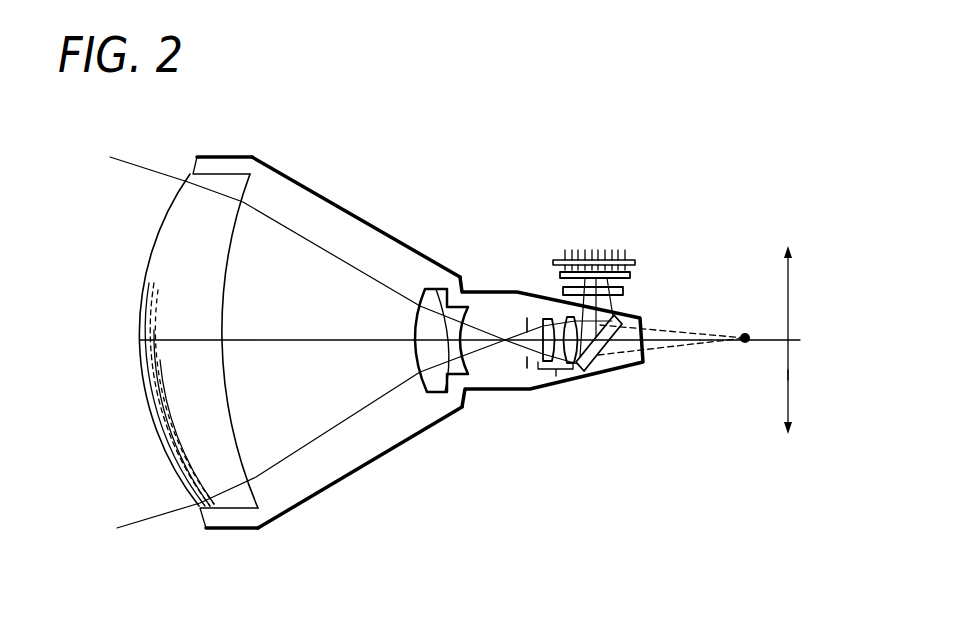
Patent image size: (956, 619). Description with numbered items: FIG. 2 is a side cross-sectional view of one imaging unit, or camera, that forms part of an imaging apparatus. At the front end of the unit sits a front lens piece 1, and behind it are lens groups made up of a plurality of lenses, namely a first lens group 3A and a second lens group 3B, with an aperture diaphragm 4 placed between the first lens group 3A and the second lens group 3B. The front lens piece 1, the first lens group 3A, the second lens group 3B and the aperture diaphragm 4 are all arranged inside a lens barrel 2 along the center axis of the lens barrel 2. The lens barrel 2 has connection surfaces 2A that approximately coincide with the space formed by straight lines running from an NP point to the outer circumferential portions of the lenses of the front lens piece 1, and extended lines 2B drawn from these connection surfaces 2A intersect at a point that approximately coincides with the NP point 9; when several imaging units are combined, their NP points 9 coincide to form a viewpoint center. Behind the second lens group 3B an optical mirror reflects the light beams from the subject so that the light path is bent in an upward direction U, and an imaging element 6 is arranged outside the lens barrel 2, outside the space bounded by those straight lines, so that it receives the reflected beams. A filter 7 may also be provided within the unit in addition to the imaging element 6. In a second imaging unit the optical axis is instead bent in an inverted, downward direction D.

The front lens piece 1 is at (223, 478).
The lens barrel 2 is at (323, 493).
The connection surface 2A is at (383, 228).
The extended line 2B is at (676, 321).
The first lens group 3A is at (475, 367).
The second lens group 3B is at (557, 376).
The aperture diaphragm 4 is at (523, 368).
The imaging element 6 is at (636, 262).
The filter 7 is at (624, 291).
The NP point 9 is at (745, 347).
The upward direction U is at (792, 298).
The downward direction D is at (792, 375).